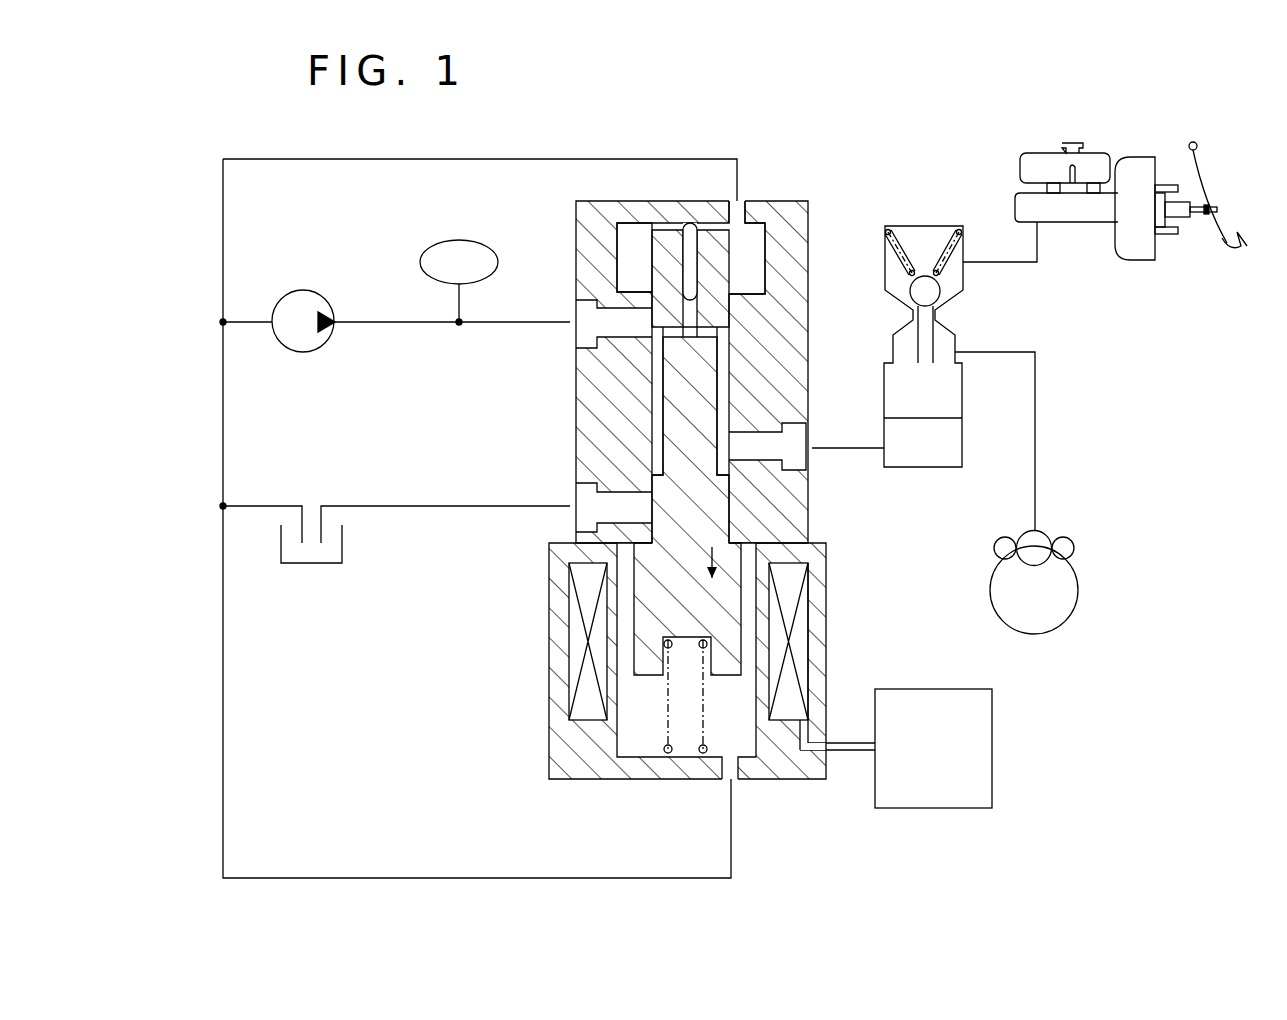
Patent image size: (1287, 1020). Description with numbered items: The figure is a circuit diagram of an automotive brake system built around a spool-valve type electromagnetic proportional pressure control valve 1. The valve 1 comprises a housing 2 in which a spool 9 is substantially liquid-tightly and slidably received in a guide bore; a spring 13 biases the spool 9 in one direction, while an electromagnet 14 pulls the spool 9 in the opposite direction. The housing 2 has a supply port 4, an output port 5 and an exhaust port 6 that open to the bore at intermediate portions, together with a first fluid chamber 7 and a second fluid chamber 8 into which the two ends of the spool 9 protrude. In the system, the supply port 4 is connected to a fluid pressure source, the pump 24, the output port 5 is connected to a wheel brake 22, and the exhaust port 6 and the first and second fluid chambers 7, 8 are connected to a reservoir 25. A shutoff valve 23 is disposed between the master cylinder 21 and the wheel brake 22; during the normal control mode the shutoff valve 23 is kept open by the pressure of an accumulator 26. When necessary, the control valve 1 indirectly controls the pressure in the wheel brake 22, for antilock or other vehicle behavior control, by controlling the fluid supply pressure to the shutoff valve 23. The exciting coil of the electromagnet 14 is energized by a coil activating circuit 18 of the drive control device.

The electromagnetic proportional pressure control valve 1 is at (679, 349).
The housing 2 is at (792, 220).
The supply port 4 is at (587, 315).
The output port 5 is at (796, 458).
The exhaust port 6 is at (587, 517).
The first fluid chamber 7 is at (628, 242).
The second fluid chamber 8 is at (723, 694).
The spool 9 is at (706, 400).
The spring 13 is at (703, 755).
The electromagnet 14 is at (816, 628).
The coil activating circuit 18 is at (898, 705).
The master cylinder 21 is at (1075, 210).
The wheel brake 22 is at (1037, 543).
The shutoff valve 23 is at (962, 331).
The pump 24 is at (310, 343).
The reservoir 25 is at (322, 563).
The accumulator 26 is at (420, 262).